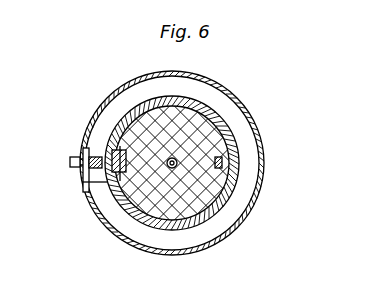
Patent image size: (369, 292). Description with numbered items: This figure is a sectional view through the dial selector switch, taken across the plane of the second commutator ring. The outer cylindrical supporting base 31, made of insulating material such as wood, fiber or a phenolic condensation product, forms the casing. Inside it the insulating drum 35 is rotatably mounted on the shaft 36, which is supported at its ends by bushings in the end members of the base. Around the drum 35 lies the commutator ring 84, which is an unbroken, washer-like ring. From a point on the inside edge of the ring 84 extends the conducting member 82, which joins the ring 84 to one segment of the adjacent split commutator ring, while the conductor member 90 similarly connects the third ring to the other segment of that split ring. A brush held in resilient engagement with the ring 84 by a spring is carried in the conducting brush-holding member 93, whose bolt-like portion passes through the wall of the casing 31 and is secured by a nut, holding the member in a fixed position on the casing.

The outer cylindrical supporting base 31 is at (232, 93).
The drum 35 is at (205, 112).
The shaft 36 is at (205, 176).
The conducting member 82 is at (112, 152).
The commutator ring 84 is at (178, 98).
The conductor member 90 is at (223, 161).
The brush-holding member 93 is at (84, 150).